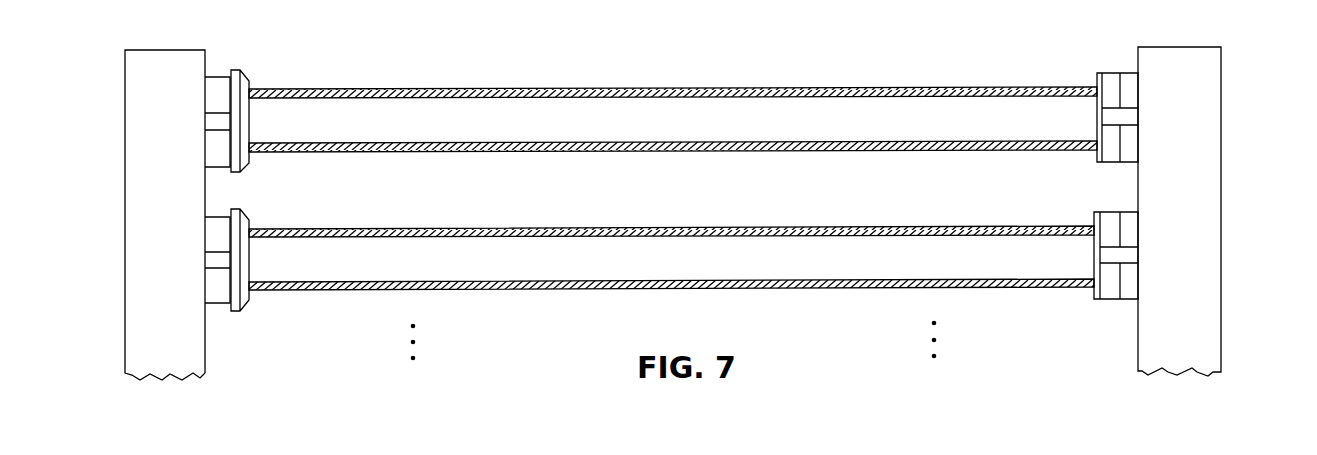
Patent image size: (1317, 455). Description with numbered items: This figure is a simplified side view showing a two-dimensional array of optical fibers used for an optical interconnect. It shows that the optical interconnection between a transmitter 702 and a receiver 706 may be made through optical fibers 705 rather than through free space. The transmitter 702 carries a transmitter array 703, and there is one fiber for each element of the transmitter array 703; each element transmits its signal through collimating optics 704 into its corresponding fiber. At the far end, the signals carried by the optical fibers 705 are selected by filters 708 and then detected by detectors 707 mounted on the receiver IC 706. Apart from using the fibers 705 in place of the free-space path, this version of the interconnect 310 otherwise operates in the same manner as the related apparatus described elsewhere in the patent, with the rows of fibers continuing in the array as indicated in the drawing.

The transmitter 702 is at (133, 103).
The transmitter array 703 is at (217, 80).
The collimating optics 704 is at (248, 76).
The optical fibers 705 is at (858, 110).
The receiver 706 is at (1209, 138).
The detectors 707 is at (1128, 160).
The filters 708 is at (1112, 75).
The assembly 310 is at (1213, 0).